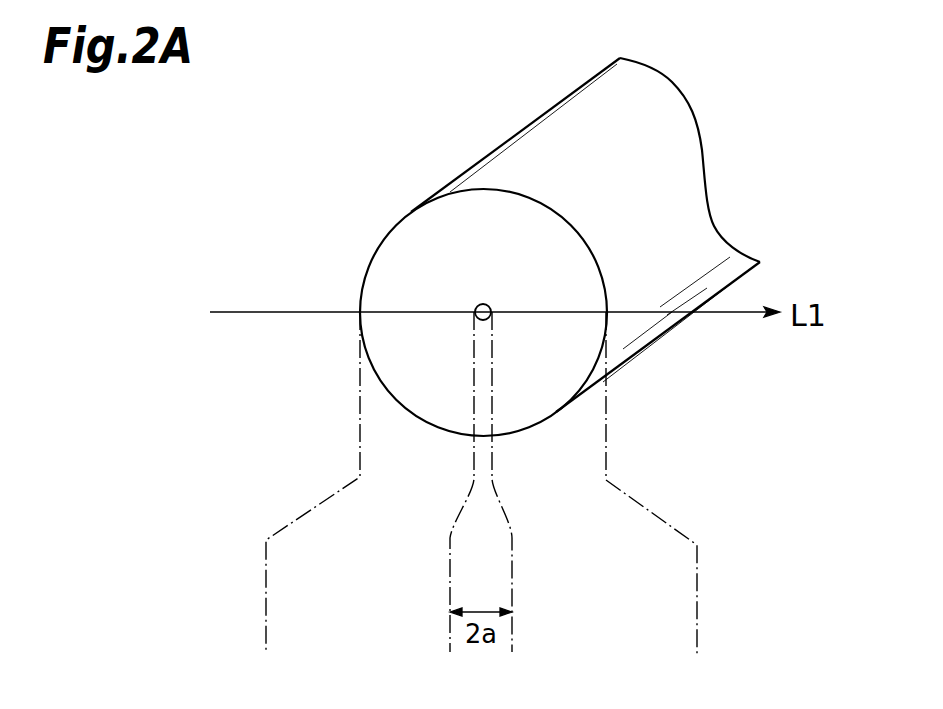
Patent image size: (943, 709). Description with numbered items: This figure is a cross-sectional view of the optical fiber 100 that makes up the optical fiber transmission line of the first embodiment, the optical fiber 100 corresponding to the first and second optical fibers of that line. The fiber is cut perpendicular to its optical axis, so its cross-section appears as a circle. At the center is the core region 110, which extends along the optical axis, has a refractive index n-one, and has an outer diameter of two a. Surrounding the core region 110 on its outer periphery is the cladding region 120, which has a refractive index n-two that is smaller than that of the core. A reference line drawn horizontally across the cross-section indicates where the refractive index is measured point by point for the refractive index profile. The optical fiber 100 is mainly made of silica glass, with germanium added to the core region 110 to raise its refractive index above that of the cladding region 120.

The optical fiber 100 is at (485, 135).
The core region 110 is at (482, 304).
The cladding region 120 is at (417, 224).